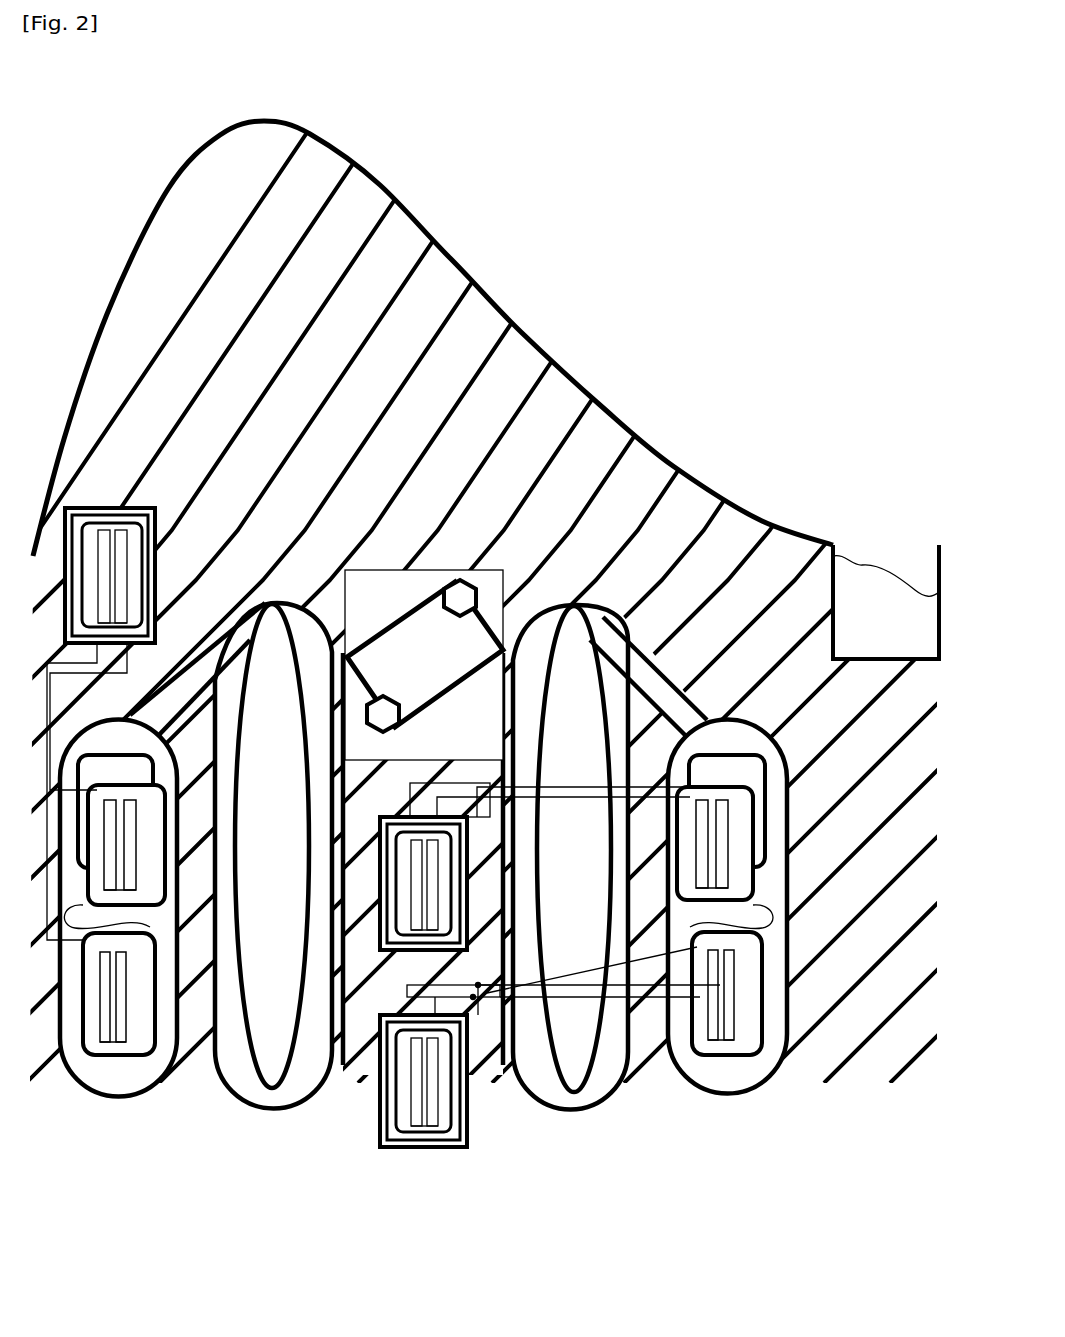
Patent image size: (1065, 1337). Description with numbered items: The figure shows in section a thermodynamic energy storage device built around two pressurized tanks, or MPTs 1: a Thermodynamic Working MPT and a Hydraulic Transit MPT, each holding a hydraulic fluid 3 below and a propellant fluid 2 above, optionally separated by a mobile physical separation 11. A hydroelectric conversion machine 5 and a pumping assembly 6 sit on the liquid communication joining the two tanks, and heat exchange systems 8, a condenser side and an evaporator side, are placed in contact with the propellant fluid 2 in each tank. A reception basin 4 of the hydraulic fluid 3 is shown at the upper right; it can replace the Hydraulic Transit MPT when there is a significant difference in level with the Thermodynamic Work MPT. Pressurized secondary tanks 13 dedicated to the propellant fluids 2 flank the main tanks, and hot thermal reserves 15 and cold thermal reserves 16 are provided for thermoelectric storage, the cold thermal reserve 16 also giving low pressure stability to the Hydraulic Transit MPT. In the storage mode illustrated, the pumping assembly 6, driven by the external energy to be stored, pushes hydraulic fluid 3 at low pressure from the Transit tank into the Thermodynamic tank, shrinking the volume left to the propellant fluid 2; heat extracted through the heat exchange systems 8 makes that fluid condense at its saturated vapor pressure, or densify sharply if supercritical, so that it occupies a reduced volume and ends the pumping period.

The pressurized tank (MPT) 1 is at (418, 909).
The propellant fluid 2 is at (145, 1067).
The hydraulic fluid 3 is at (862, 607).
The reception basin 4 is at (910, 555).
The hydroelectric conversion machine 5 is at (455, 592).
The pumping assembly 6 is at (487, 514).
The heat exchange system 8 is at (95, 957).
The mobile physical separation 11 is at (307, 963).
The pressurized secondary tank 13 is at (83, 1037).
The hot thermal reserve 15 is at (375, 983).
The cold thermal reserve 16 is at (157, 514).